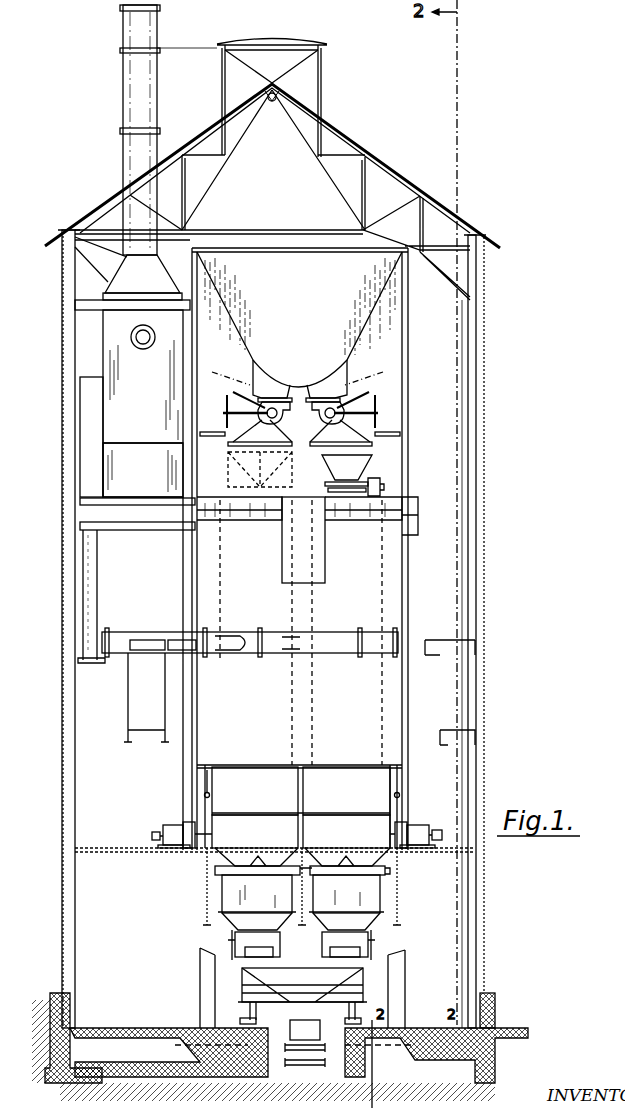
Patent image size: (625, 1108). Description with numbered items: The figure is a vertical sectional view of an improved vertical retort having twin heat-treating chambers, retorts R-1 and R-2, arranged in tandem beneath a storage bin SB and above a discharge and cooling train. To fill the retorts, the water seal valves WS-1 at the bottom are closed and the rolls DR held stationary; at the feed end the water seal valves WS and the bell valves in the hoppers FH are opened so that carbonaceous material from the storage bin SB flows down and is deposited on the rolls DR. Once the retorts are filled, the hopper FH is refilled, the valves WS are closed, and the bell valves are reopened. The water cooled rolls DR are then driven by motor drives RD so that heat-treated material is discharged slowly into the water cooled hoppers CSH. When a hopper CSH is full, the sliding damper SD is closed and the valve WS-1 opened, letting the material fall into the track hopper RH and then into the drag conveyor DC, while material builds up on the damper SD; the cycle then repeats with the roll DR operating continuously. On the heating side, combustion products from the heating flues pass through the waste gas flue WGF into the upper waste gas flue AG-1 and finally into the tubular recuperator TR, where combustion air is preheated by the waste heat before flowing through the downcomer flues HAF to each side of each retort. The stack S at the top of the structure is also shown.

The stack S is at (124, 95).
The tubular recuperator TR is at (131, 403).
The upper waste gas flue AG-1 is at (143, 470).
The storage bin SB is at (300, 549).
The water seal valve WS is at (328, 418).
The hopper FH is at (368, 469).
The waste gas flue WGF is at (287, 548).
The retort R-2 is at (256, 632).
The retort R-1 is at (347, 632).
The downcomer flue HAF is at (163, 632).
The cooling section CS is at (302, 806).
The discharge roll DR is at (301, 831).
The motor drive RD is at (168, 825).
The sliding damper SD is at (213, 874).
The water cooled hopper CSH is at (301, 902).
The water seal valve WS-1 is at (233, 941).
The track hopper RH is at (302, 996).
The drag conveyor DC is at (313, 1043).